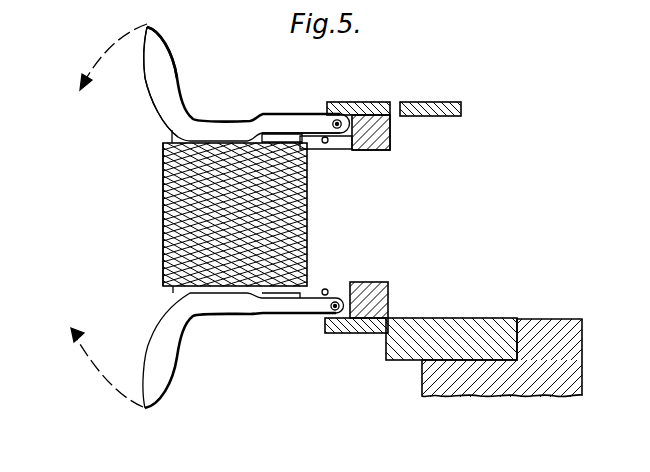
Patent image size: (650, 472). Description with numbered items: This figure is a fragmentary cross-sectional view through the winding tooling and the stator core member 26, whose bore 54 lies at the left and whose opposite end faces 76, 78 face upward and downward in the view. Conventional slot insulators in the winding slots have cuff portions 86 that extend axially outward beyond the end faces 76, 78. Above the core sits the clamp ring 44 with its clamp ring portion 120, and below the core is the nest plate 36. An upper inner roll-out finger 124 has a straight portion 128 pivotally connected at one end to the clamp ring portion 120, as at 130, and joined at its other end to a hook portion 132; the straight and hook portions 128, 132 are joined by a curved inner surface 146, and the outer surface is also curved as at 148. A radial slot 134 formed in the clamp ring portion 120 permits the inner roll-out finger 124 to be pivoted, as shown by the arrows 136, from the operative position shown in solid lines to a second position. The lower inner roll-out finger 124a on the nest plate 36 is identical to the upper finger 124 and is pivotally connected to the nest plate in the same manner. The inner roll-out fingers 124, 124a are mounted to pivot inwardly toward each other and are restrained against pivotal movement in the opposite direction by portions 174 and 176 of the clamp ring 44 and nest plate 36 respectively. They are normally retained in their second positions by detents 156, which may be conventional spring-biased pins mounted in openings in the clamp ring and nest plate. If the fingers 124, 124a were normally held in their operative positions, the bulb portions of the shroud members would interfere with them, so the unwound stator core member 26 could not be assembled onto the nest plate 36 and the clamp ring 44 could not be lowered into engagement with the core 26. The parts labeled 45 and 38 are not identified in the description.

The stator core member 26 is at (308, 223).
The bore 54 is at (163, 231).
The inner roll-out fingers 124 is at (205, 105).
The inner roll-out fingers 124a is at (200, 327).
The curved inner surface 146 is at (187, 103).
The hook portions 132 is at (178, 65).
The curved outer surface 148 is at (148, 102).
The arrows 136 is at (100, 53).
The straight portions 128 is at (283, 112).
The radial slots 134 is at (317, 141).
The pivotal connection 130 is at (355, 150).
The end face 76 is at (307, 168).
The portion of clamp ring 174 is at (350, 102).
The clamp ring 44 is at (372, 100).
The clamp ring portion 120 is at (388, 137).
The bar 45 is at (440, 102).
The cuff portions 86 is at (175, 293).
The end face 78 is at (307, 288).
The detents 156 is at (330, 290).
The nest plate 36 is at (457, 318).
The portion of nest plate 176 is at (337, 333).
The base 38 is at (547, 318).